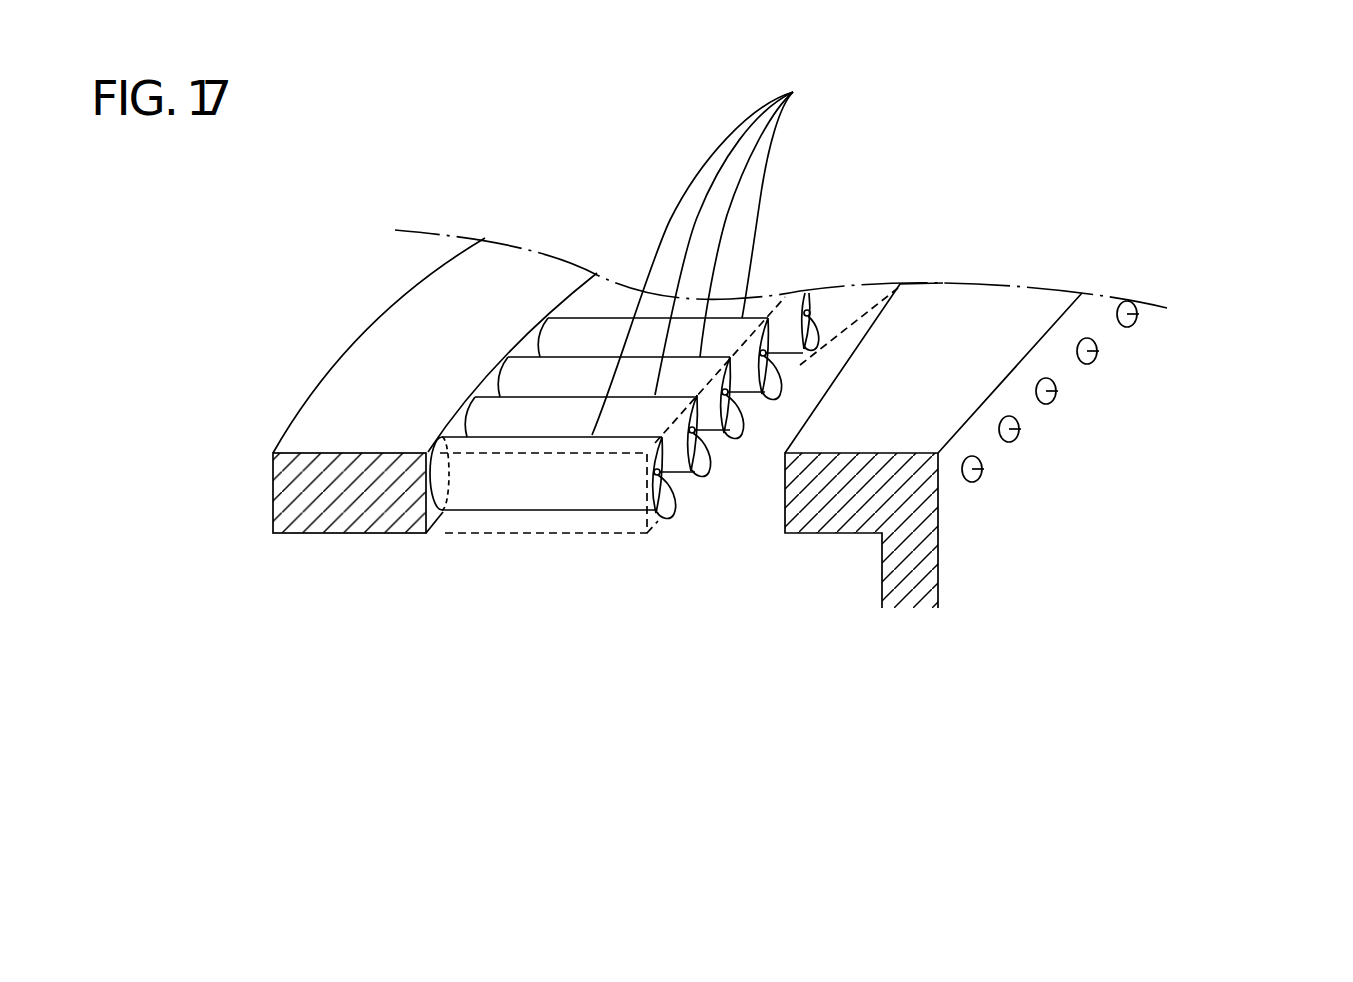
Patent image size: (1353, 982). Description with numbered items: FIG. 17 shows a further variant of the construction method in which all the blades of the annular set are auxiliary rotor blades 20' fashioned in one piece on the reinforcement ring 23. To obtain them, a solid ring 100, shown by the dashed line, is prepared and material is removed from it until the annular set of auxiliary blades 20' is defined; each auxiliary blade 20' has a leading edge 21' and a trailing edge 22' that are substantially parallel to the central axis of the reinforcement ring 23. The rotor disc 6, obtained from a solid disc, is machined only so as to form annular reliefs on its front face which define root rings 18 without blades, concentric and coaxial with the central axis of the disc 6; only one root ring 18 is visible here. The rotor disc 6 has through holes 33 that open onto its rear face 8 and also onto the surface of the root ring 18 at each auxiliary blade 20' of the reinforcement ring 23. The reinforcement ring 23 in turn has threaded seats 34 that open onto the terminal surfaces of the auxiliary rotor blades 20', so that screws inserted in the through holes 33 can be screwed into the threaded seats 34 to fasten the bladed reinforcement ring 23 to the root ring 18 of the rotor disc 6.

The rotor disc 6 is at (1050, 283).
The rear face 8 is at (992, 573).
The root ring 18 is at (832, 542).
The auxiliary rotor blades 20' is at (552, 293).
The leading edge 21' is at (532, 550).
The trailing edge 22' is at (716, 254).
The reinforcement ring 23 is at (330, 542).
The through holes 33 is at (1097, 351).
The threaded seats 34 is at (692, 432).
The solid ring 100 is at (557, 535).